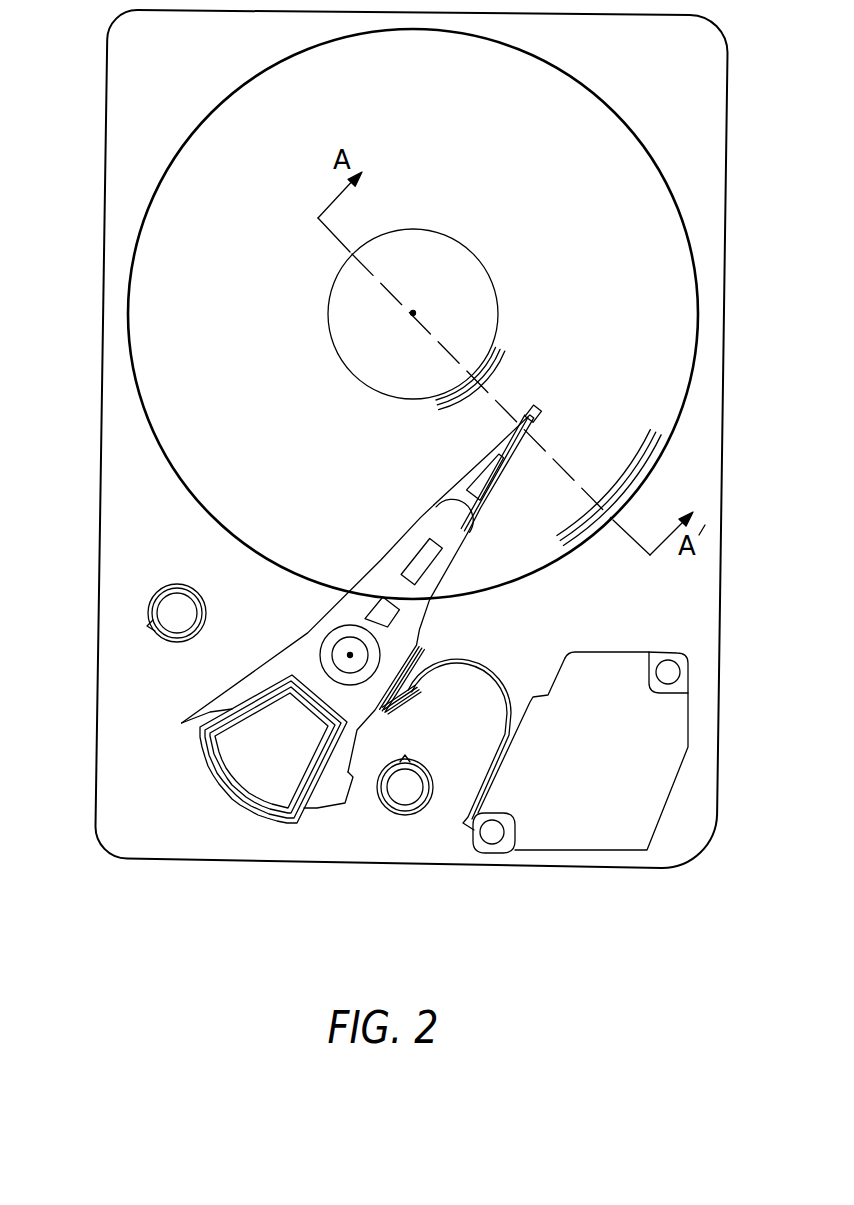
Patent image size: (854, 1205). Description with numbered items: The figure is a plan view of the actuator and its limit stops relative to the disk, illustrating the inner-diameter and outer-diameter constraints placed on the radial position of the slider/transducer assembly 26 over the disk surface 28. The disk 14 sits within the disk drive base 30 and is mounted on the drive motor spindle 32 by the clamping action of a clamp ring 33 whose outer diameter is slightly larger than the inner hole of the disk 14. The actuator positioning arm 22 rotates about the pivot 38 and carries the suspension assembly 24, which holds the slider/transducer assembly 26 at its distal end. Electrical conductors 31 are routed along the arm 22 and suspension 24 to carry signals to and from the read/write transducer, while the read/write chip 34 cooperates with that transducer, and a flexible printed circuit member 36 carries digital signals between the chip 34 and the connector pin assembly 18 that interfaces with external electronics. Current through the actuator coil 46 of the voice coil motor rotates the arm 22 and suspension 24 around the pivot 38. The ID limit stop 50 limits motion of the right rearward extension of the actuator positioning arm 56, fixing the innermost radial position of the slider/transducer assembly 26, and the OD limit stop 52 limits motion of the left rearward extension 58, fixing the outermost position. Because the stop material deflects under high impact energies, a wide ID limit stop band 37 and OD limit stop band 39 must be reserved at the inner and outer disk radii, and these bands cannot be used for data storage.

The disk 14 is at (620, 117).
The connector pin assembly 18 is at (595, 840).
The actuator positioning arm 22 is at (407, 598).
The suspension assembly 24 is at (500, 452).
The slider/transducer assembly 26 is at (537, 415).
The disk surface 28 is at (157, 270).
The disk drive base 30 is at (727, 178).
The electrical conductors 31 is at (480, 513).
The drive motor spindle 32 is at (413, 313).
The clamp ring 33 is at (487, 297).
The read/write chip 34 is at (398, 677).
The flexible printed circuit member 36 is at (493, 676).
The ID limit stop band 37 is at (497, 355).
The pivot 38 is at (350, 655).
The OD limit stop band 39 is at (633, 458).
The actuator coil 46 is at (227, 788).
The ID limit stop 50 is at (407, 815).
The OD limit stop 52 is at (168, 588).
The right rearward extension of the actuator positioning arm 56 is at (328, 812).
The left rearward extension of the actuator positioning arm 58 is at (180, 717).